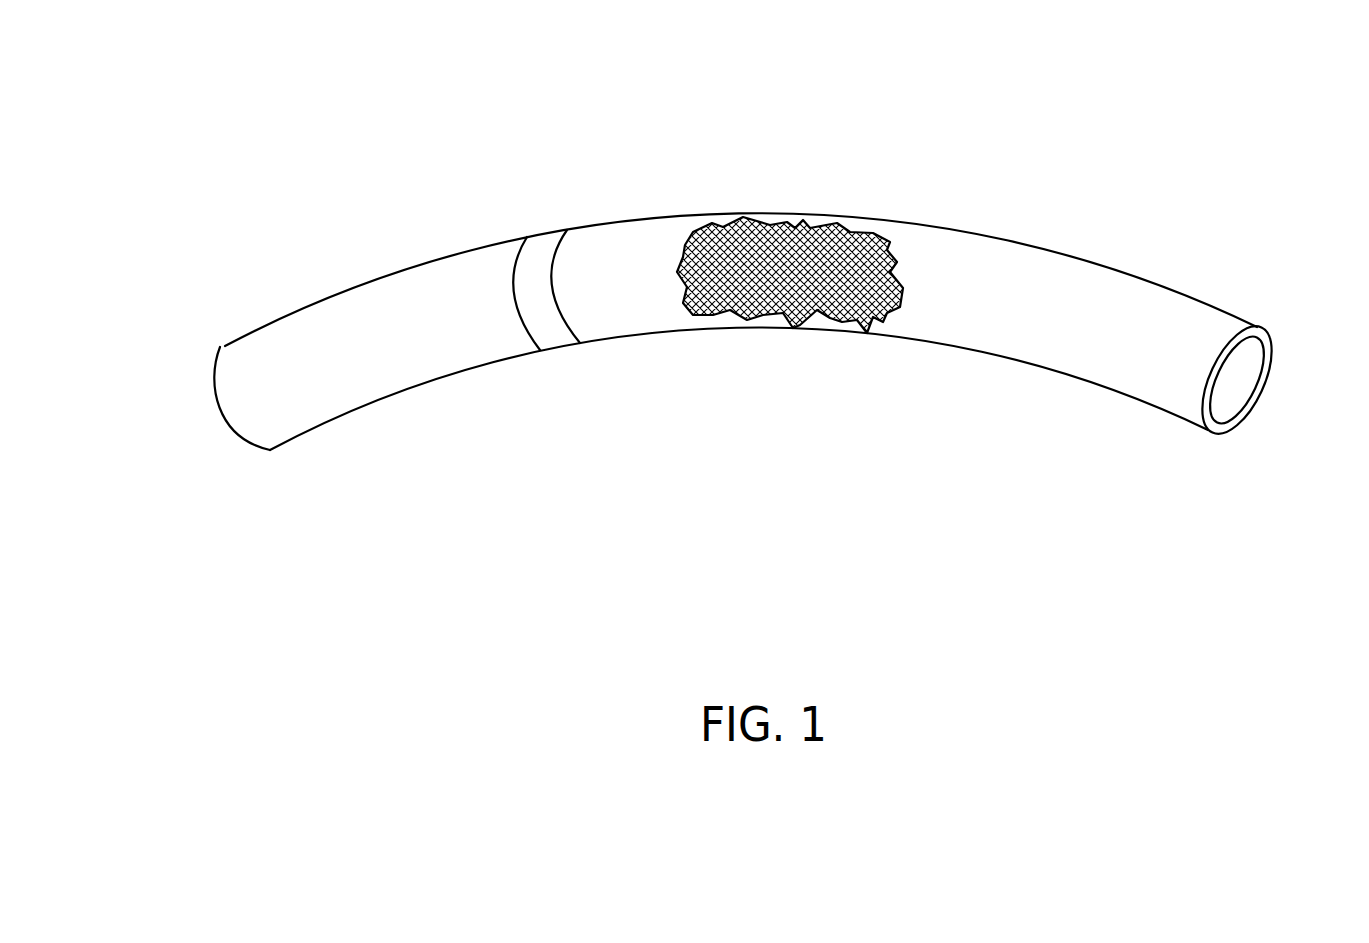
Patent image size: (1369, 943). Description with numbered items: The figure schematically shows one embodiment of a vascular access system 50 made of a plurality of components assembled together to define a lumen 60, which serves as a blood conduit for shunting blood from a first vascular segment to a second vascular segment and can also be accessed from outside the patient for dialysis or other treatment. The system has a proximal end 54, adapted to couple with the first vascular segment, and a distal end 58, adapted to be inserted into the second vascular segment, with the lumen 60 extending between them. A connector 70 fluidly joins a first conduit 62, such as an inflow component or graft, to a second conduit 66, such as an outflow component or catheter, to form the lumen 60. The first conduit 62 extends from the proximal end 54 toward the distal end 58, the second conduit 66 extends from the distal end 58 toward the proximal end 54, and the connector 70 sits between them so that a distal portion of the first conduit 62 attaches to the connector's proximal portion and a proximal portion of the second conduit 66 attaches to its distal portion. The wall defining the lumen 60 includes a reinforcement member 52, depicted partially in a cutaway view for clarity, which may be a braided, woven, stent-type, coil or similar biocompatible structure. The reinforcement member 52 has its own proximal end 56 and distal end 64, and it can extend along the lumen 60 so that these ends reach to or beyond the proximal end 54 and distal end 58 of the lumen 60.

The vascular access system 50 is at (742, 237).
The reinforcement member 52 is at (790, 223).
The proximal end 54 is at (225, 348).
The proximal end of the reinforcement member 56 is at (682, 188).
The distal end 58 is at (1258, 328).
The lumen 60 is at (1233, 380).
The first conduit 62 is at (377, 280).
The distal end of the reinforcement member 64 is at (927, 208).
The second conduit 66 is at (1053, 252).
The connector 70 is at (543, 235).